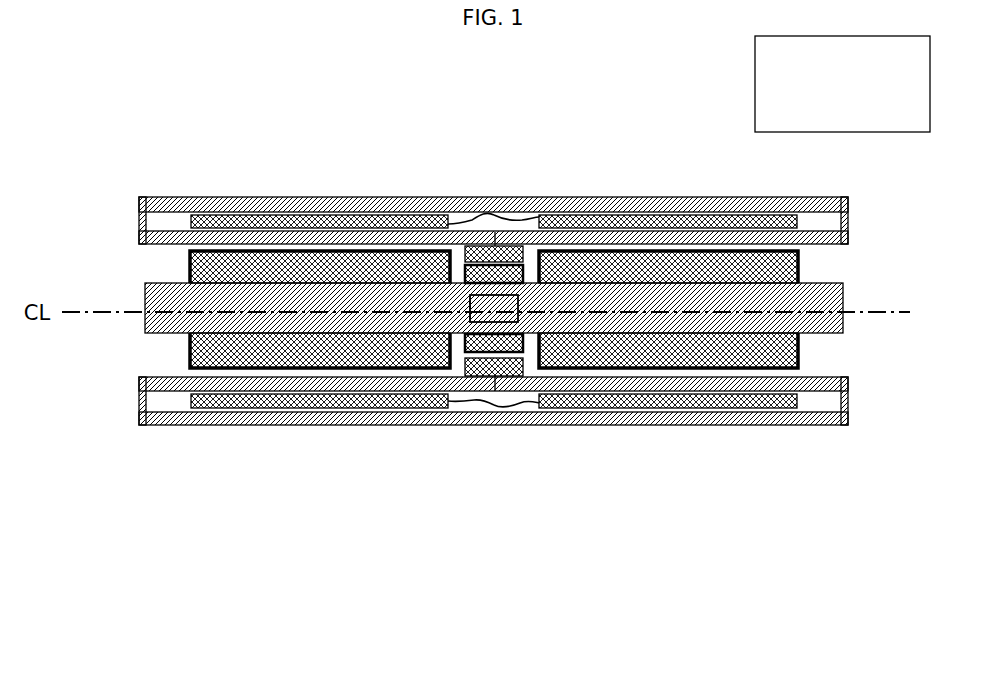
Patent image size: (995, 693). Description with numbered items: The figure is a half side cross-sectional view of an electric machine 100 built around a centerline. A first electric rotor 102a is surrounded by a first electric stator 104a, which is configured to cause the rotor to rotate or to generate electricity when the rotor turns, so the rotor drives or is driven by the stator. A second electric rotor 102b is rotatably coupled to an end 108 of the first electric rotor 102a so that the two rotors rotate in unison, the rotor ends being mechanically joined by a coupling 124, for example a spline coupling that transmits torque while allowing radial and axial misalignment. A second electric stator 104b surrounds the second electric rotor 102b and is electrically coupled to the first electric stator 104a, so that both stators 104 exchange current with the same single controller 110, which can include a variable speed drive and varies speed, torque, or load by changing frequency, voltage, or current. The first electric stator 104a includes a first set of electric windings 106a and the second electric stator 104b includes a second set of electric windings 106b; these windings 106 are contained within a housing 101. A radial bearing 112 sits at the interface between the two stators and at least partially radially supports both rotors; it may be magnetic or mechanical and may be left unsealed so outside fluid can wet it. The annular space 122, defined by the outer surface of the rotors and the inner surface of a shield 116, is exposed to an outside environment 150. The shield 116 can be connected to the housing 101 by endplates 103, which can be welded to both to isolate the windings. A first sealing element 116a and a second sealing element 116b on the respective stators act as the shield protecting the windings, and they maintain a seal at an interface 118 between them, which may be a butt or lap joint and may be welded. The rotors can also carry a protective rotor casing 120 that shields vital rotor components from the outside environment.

The electric machine 100 is at (205, 175).
The housing 101 is at (273, 198).
The first electric rotor 102a is at (319, 250).
The second electric rotor 102b is at (668, 245).
The endplates 103 is at (138, 220).
The stators 104 is at (347, 608).
The first electric stator 104a is at (291, 442).
The second electric stator 104b is at (766, 442).
The windings 106 is at (460, 515).
The first set of electric windings 106a is at (460, 383).
The second set of electric windings 106b is at (540, 403).
The end of the first electric rotor 108 is at (494, 323).
The controller 110 is at (668, 245).
The radial bearing 112 is at (450, 261).
The shield 116 is at (452, 142).
The first sealing element 116a is at (476, 234).
The second sealing element 116b is at (545, 234).
The interface 118 is at (495, 388).
The protective rotor casing 120 is at (322, 370).
The annular space 122 is at (797, 373).
The coupling 124 is at (468, 312).
The outside environment 150 is at (530, 298).